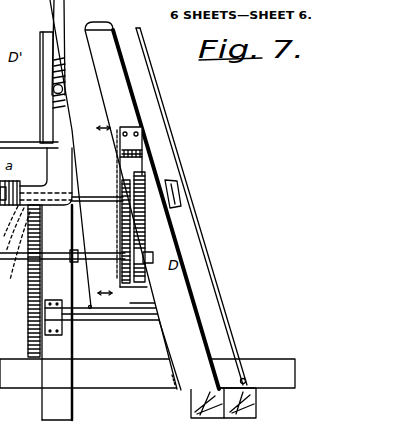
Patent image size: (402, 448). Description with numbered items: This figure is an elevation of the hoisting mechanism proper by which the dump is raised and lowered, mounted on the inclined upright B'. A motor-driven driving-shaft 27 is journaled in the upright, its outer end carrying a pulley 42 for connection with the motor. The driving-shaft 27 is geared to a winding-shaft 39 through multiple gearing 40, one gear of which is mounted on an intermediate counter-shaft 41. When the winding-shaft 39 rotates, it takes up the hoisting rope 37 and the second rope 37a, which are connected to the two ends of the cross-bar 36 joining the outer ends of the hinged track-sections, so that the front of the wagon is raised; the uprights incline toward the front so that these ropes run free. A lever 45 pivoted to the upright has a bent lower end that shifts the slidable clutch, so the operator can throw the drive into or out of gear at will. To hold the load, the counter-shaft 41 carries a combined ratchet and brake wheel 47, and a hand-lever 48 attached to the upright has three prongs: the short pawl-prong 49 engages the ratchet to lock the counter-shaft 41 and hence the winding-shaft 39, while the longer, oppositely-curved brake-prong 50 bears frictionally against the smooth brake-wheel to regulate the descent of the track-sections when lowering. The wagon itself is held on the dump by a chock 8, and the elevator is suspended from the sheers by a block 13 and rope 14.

The chock 8 is at (109, 209).
The block 13 is at (16, 249).
The rope 14 is at (12, 234).
The driving-shaft 27 is at (97, 184).
The cross-bar 36 is at (246, 418).
The rope 37 is at (250, 336).
The rope 37a is at (163, 338).
The winding-shaft 39 is at (122, 321).
The multiple gearing 40 is at (41, 240).
The counter-shaft 41 is at (95, 262).
The pulley 42 is at (182, 190).
The lever 45 is at (52, 114).
The combined ratchet and brake wheel 47 is at (154, 301).
The hand-lever 48 is at (132, 207).
The pawl-prong 49 is at (144, 218).
The brake-prong 50 is at (122, 223).